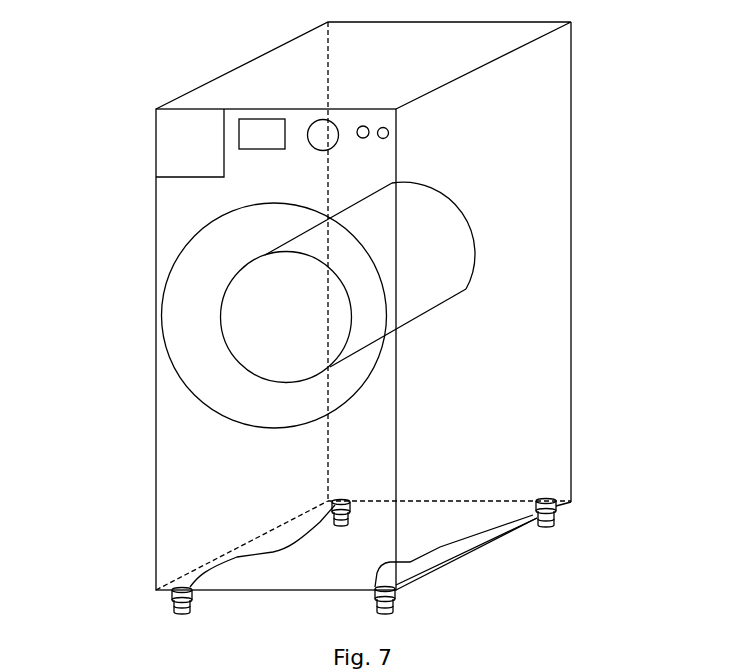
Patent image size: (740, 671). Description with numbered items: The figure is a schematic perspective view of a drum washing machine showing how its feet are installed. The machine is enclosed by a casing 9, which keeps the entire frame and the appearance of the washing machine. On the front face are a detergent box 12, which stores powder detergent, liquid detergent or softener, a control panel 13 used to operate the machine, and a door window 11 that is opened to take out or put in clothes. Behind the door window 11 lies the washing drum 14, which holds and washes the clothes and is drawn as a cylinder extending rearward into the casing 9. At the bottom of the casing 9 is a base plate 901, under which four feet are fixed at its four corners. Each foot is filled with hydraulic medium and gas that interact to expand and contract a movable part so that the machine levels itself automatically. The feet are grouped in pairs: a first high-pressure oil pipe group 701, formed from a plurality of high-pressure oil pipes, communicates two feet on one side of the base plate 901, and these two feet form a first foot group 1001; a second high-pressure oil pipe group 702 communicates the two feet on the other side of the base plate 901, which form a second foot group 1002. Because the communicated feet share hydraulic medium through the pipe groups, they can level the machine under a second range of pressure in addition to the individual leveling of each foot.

The casing 9 is at (533, 333).
The door window 11 is at (176, 314).
The detergent box 12 is at (177, 143).
The control panel 13 is at (347, 145).
The washing drum 14 is at (433, 245).
The first high-pressure oil pipe group 701 is at (442, 547).
The second high-pressure oil pipe group 702 is at (273, 552).
The base plate 901 is at (427, 535).
The first foot group 1001 is at (466, 557).
The second foot group 1002 is at (261, 564).